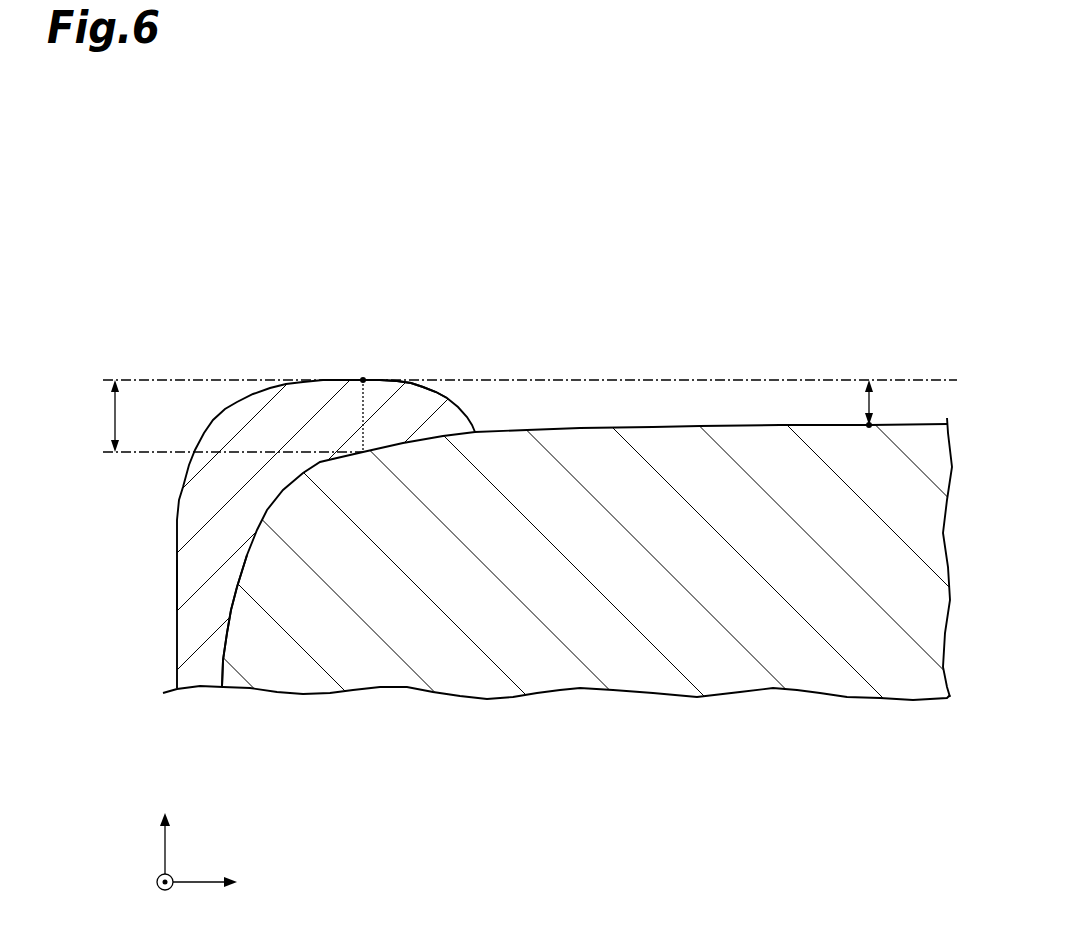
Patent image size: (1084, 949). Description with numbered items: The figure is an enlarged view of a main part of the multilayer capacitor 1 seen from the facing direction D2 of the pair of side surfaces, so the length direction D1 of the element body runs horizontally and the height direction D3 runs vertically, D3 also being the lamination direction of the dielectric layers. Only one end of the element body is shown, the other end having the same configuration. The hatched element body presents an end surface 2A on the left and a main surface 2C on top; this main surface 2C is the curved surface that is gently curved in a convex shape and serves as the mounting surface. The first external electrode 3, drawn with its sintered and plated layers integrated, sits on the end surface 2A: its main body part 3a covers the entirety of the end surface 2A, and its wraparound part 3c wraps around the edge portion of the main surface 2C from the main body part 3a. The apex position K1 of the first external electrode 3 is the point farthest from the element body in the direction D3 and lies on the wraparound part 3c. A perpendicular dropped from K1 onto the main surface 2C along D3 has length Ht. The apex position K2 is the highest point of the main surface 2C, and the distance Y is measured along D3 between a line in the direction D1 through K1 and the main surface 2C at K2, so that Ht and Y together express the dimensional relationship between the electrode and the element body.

The multilayer capacitor 1 is at (213, 256).
The end surface 2A is at (220, 639).
The main surface 2C is at (655, 427).
The first external electrode 3 is at (142, 543).
The main body part 3a is at (192, 582).
The wraparound part 3c is at (418, 397).
The apex position of the first external electrode K1 is at (363, 380).
The apex position of the main surface K2 is at (869, 425).
The distance Ht is at (97, 416).
The distance Y is at (882, 402).
The facing direction of the pair of end surfaces D1 is at (225, 883).
The facing direction of the pair of side surfaces D2 is at (146, 899).
The facing direction of the pair of main surfaces D3 is at (165, 827).